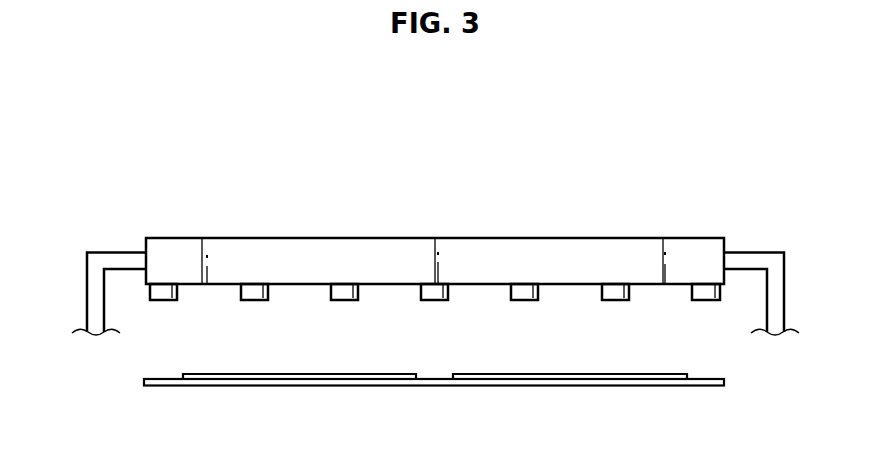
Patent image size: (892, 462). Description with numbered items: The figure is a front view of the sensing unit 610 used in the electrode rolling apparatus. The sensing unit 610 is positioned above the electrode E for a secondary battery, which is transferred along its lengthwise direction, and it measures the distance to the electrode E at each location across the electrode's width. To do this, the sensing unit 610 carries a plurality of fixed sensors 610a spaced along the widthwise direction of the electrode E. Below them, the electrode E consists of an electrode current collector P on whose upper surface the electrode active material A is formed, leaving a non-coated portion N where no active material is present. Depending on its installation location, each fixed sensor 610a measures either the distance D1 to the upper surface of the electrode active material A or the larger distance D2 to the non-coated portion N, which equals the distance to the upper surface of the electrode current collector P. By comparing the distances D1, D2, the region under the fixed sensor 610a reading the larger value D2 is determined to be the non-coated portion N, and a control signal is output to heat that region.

The sensing unit 610 is at (210, 160).
The fixed sensor 610a is at (163, 301).
The electrode current collector P is at (727, 383).
The electrode active material A is at (299, 373).
The non-coated portion N is at (706, 378).
The distance D1 is at (525, 301).
The distance D2 is at (435, 301).
The electrode E is at (136, 387).